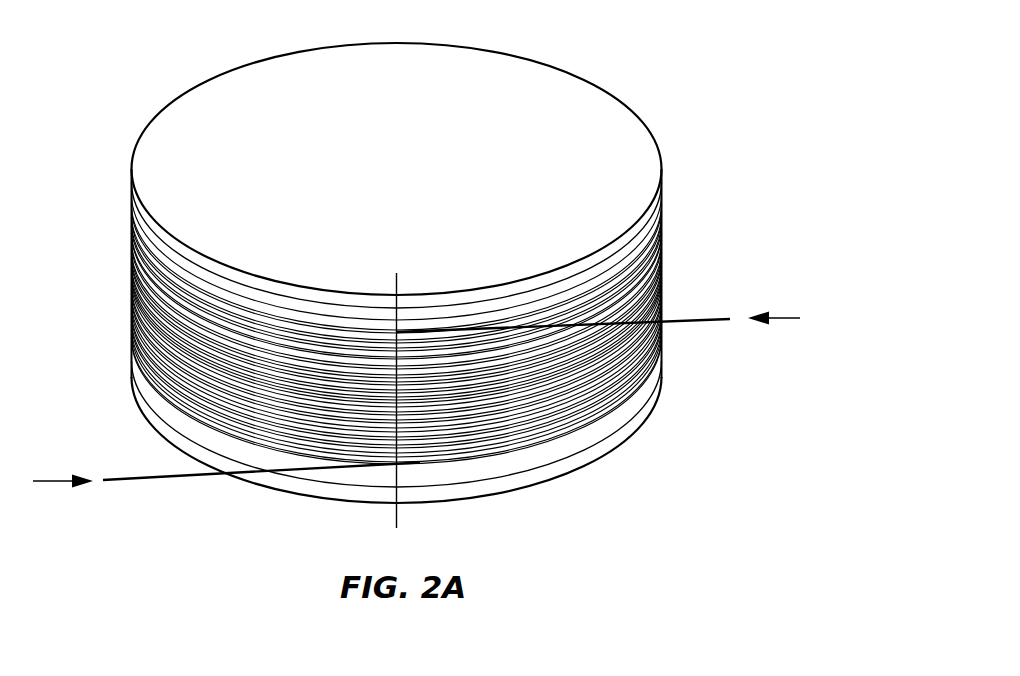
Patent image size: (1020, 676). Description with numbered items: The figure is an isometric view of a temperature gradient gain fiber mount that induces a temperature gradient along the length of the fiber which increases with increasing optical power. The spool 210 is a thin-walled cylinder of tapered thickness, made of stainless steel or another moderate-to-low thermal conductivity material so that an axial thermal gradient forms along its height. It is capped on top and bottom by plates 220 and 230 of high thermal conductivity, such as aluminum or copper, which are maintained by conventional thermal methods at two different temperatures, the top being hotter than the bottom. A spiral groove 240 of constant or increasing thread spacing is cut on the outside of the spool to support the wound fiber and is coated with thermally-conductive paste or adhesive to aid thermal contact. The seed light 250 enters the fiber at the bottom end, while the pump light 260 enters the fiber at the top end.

The spool 210 is at (651, 236).
The plate 220 is at (407, 495).
The plate 230 is at (399, 167).
The spiral groove 240 is at (656, 263).
The seed light 250 is at (226, 500).
The pump light 260 is at (598, 340).